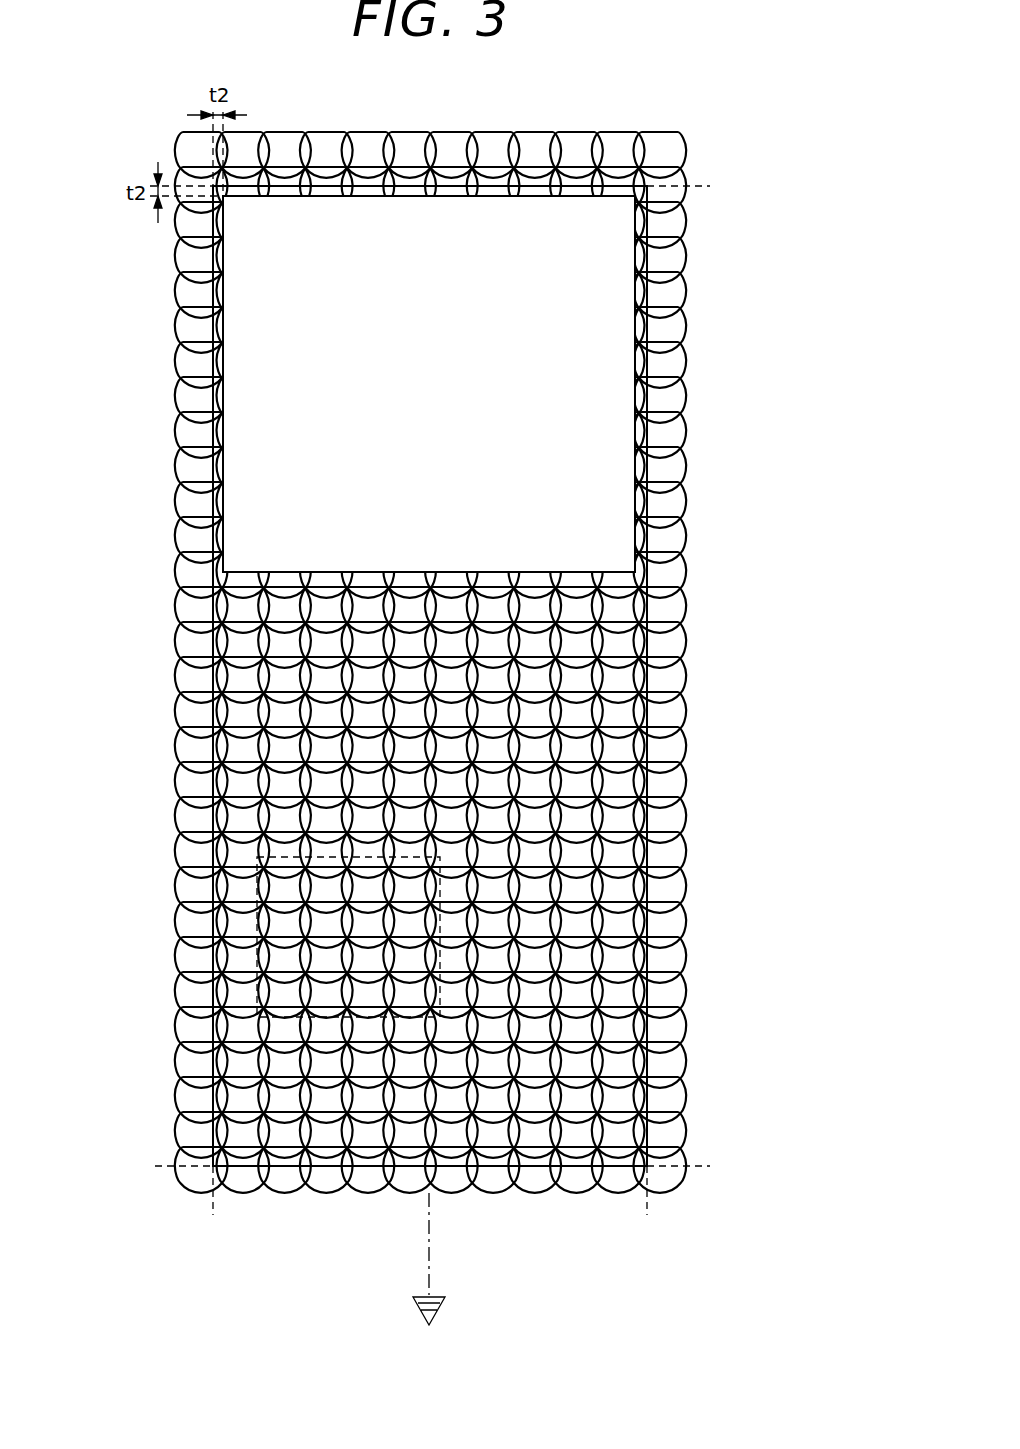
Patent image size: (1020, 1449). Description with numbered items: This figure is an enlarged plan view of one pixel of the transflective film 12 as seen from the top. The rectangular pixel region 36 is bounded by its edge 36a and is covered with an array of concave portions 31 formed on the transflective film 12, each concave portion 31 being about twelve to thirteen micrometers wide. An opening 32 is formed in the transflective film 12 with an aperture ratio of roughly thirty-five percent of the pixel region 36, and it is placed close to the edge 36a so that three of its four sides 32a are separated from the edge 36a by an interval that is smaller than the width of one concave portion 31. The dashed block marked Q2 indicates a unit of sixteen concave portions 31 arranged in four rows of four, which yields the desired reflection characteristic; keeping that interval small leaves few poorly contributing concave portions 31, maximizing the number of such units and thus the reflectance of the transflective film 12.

The transflective film 12 is at (441, 666).
The concave portion 31 is at (530, 143).
The opening 32 is at (450, 326).
The side of the opening 32a is at (638, 280).
The pixel region 36 is at (432, 676).
The edge of the pixel region 36a is at (212, 316).
The unit of concave portions Q2 is at (257, 957).